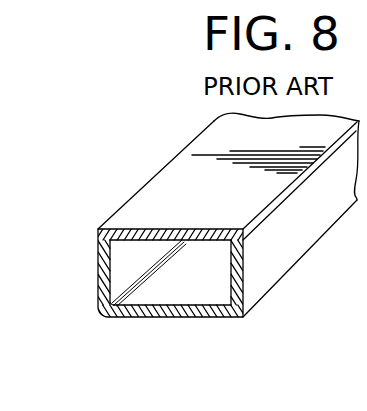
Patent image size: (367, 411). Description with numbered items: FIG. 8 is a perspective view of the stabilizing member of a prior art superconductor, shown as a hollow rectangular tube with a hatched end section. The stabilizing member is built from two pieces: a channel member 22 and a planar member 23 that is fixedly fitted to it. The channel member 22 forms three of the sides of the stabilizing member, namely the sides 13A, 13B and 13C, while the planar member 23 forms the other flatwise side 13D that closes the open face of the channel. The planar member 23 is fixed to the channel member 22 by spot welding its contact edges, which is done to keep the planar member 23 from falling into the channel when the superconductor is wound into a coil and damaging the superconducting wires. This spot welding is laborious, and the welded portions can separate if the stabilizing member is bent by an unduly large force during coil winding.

The side 13A is at (97, 262).
The side 13B is at (182, 318).
The side 13C is at (265, 272).
The flatwise side 13D is at (157, 197).
The channel member 22 is at (98, 278).
The planar member 23 is at (200, 229).